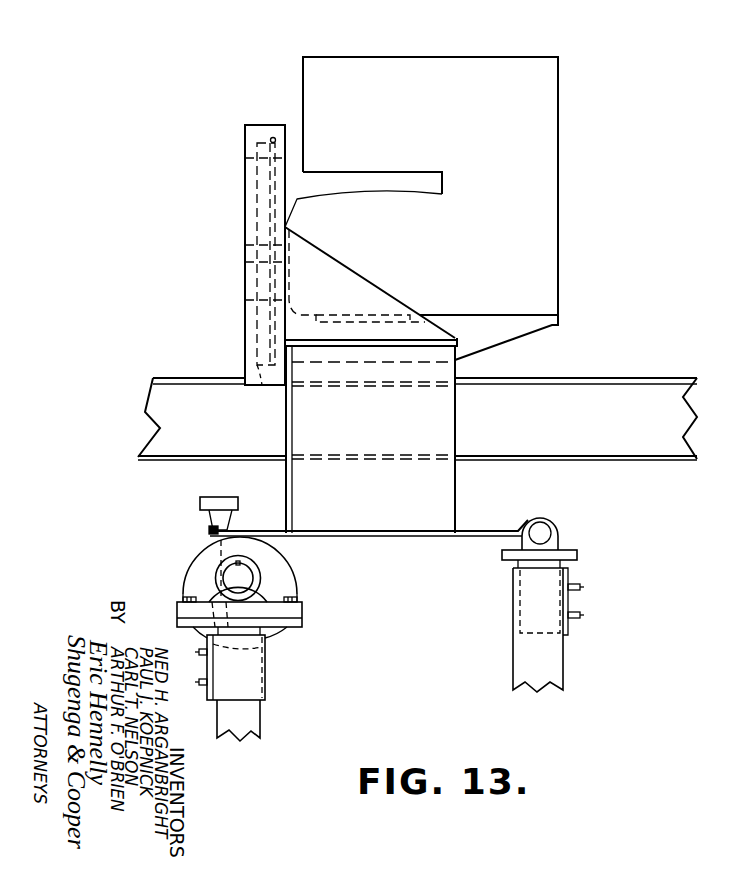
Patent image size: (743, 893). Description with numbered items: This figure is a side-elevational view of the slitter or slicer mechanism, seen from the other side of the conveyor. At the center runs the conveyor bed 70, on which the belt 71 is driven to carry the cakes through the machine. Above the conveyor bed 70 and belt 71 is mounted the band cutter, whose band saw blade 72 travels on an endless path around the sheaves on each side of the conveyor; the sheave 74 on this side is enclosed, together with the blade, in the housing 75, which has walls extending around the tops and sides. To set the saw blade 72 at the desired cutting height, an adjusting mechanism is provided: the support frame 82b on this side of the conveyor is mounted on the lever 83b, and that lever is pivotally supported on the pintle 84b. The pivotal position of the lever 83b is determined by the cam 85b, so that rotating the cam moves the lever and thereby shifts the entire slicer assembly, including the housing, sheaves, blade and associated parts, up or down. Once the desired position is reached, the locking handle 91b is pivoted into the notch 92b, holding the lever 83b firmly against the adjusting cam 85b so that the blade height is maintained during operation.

The conveyor bed 70 is at (417, 400).
The belt 71 is at (626, 356).
The band saw blade 72 is at (258, 386).
The sheave 74 is at (265, 177).
The housing 75 is at (242, 251).
The support frame 82b is at (221, 638).
The lever 83b is at (338, 531).
The pintle 84b is at (538, 528).
The cam 85b is at (290, 587).
The locking handle 91b is at (212, 497).
The notch 92b is at (208, 531).